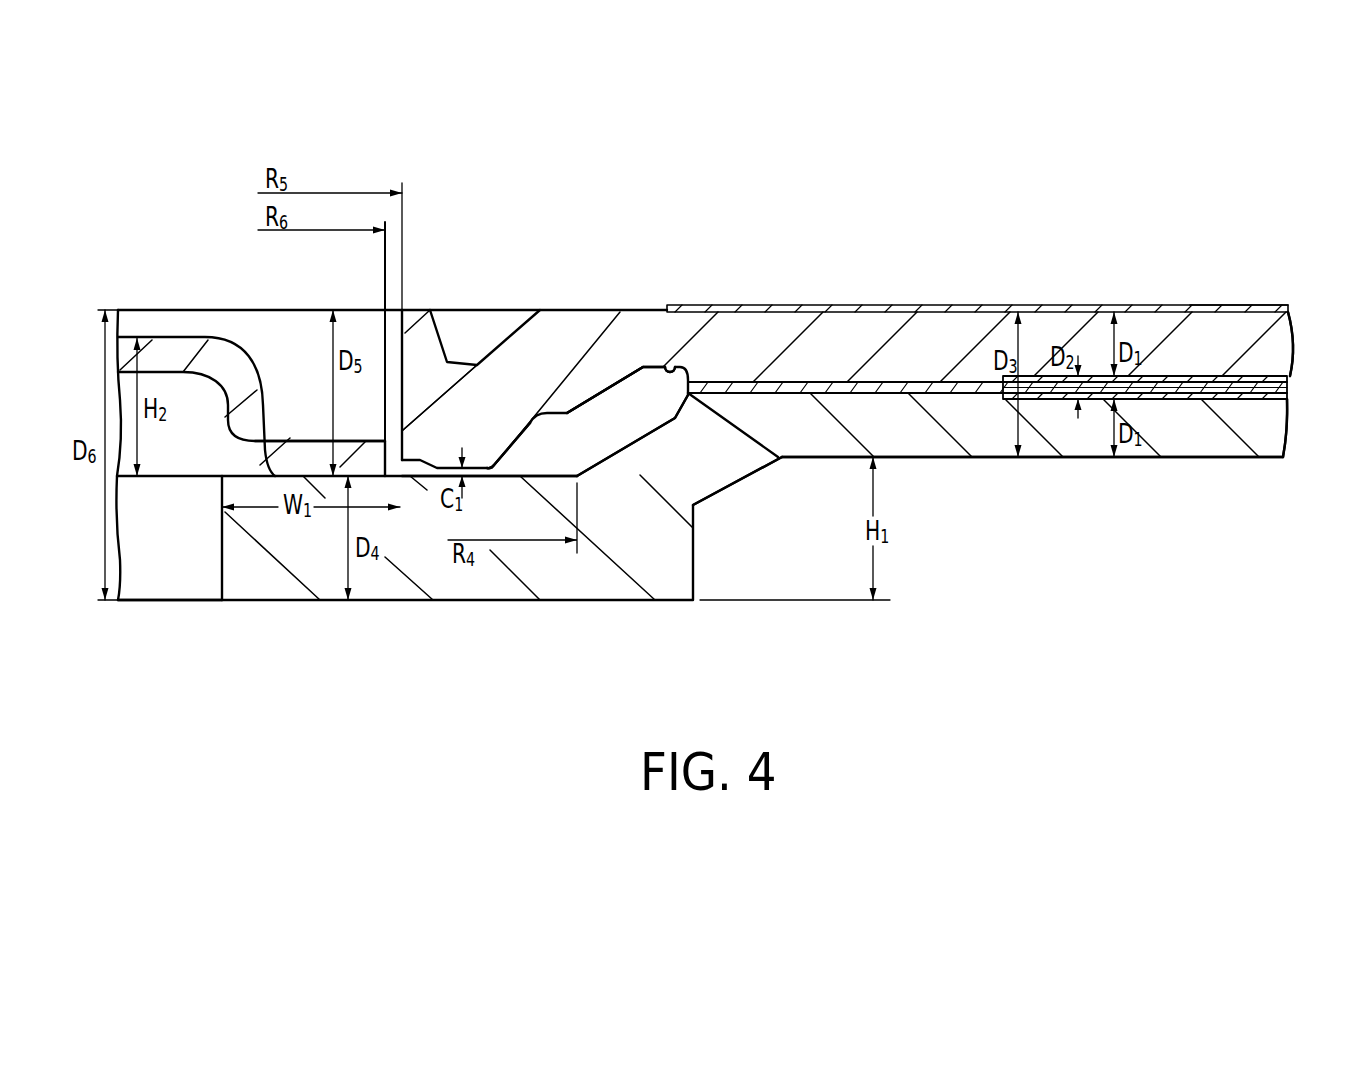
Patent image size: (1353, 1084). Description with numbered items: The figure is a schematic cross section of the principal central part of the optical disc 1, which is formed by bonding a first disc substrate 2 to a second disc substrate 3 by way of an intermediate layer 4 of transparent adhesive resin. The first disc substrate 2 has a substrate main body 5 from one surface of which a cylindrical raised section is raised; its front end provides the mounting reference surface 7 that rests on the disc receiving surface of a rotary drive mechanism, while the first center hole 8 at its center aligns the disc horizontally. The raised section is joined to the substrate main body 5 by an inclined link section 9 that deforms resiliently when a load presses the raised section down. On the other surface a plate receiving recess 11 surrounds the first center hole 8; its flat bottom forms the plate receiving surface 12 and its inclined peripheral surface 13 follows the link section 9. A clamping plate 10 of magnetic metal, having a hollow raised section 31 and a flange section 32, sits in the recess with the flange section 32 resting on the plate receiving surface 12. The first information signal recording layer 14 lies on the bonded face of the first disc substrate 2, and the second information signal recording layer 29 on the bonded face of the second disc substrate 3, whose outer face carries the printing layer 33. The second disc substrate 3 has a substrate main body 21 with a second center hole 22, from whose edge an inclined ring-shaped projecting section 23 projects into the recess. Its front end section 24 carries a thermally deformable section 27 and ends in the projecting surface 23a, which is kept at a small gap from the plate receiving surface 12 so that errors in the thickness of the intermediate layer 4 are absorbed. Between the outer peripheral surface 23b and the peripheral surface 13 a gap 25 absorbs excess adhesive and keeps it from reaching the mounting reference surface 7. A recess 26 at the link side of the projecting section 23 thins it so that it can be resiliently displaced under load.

The optical disc 1 is at (1270, 284).
The first disc substrate 2 is at (1258, 430).
The second disc substrate 3 is at (1296, 346).
The intermediate layer 4 is at (1290, 388).
The substrate main body 5 is at (1083, 452).
The mounting reference surface 7 is at (587, 603).
The first center hole 8 is at (222, 582).
The link section 9 is at (738, 470).
The clamping plate 10 is at (128, 343).
The plate receiving recess 11 is at (243, 474).
The plate receiving surface 12 is at (518, 478).
The peripheral surface 13 is at (638, 437).
The first information signal recording layer 14 is at (1285, 410).
The substrate main body 21 is at (865, 340).
The second center hole 22 is at (400, 350).
The projecting section 23 is at (527, 347).
The projecting surface 23a is at (490, 470).
The outer peripheral surface 23b is at (588, 405).
The front end section 24 is at (447, 412).
The gap 25 is at (640, 385).
The recess 26 is at (677, 366).
The thermally deformable section 27 is at (418, 332).
The second information signal recording layer 29 is at (1315, 344).
The hollow raised section 31 is at (192, 352).
The flange section 32 is at (299, 440).
The printing layer 33 is at (1208, 303).